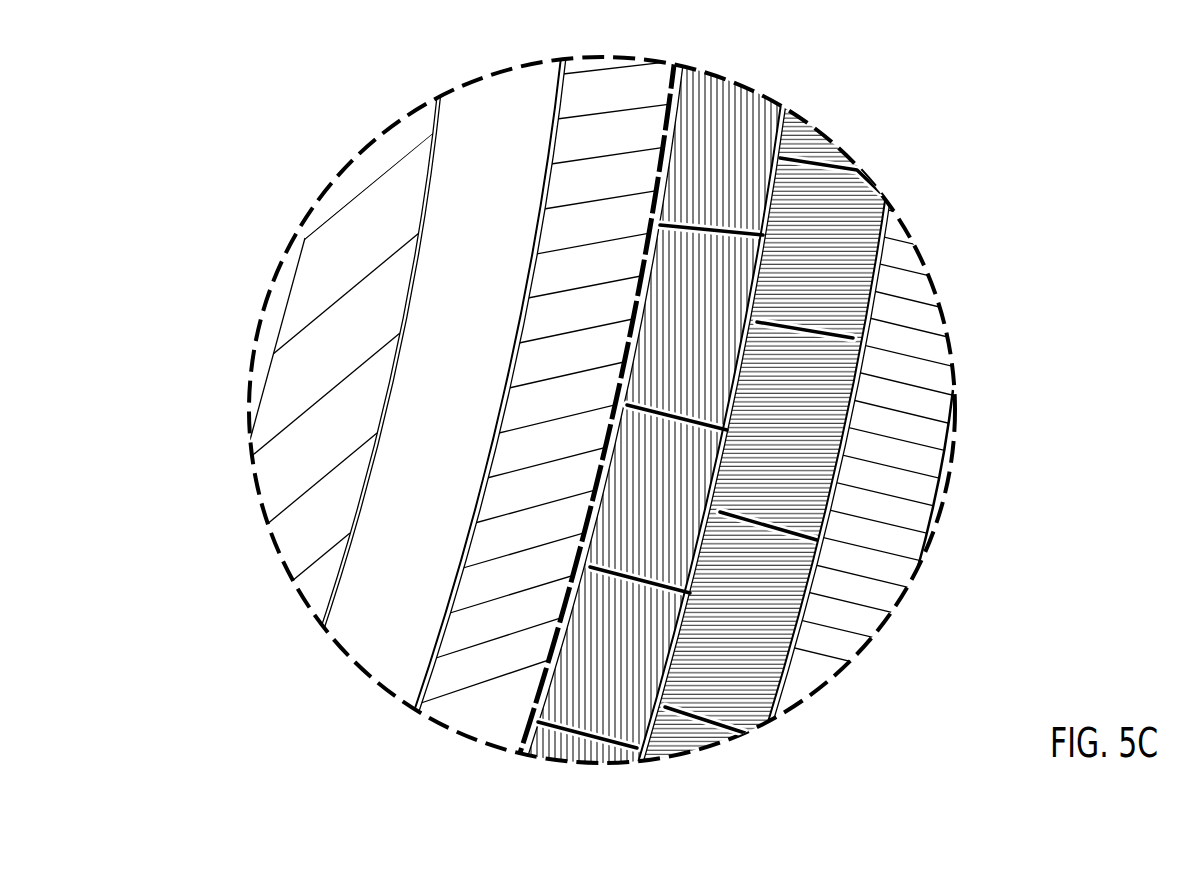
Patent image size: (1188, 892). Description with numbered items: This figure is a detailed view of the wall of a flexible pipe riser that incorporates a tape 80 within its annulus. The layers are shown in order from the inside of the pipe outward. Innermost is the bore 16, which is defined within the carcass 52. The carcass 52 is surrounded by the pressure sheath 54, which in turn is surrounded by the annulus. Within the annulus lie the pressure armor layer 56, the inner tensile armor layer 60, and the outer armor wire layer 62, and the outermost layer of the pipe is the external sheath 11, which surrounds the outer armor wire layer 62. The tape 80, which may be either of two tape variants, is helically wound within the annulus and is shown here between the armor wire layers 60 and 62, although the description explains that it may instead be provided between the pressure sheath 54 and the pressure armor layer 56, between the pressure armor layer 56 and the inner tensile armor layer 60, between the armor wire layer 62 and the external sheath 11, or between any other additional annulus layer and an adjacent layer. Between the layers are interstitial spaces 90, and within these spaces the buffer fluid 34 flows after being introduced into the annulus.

The external sheath 11 is at (907, 461).
The bore 16 is at (269, 328).
The buffer fluid 34 is at (730, 467).
The carcass 52 is at (356, 308).
The pressure sheath 54 is at (481, 291).
The pressure armor layer 56 is at (601, 304).
The inner tensile armor layer 60 is at (702, 348).
The armor wire layer 62 is at (800, 426).
The tape 80 is at (678, 68).
The interstitial spaces 90 is at (551, 130).